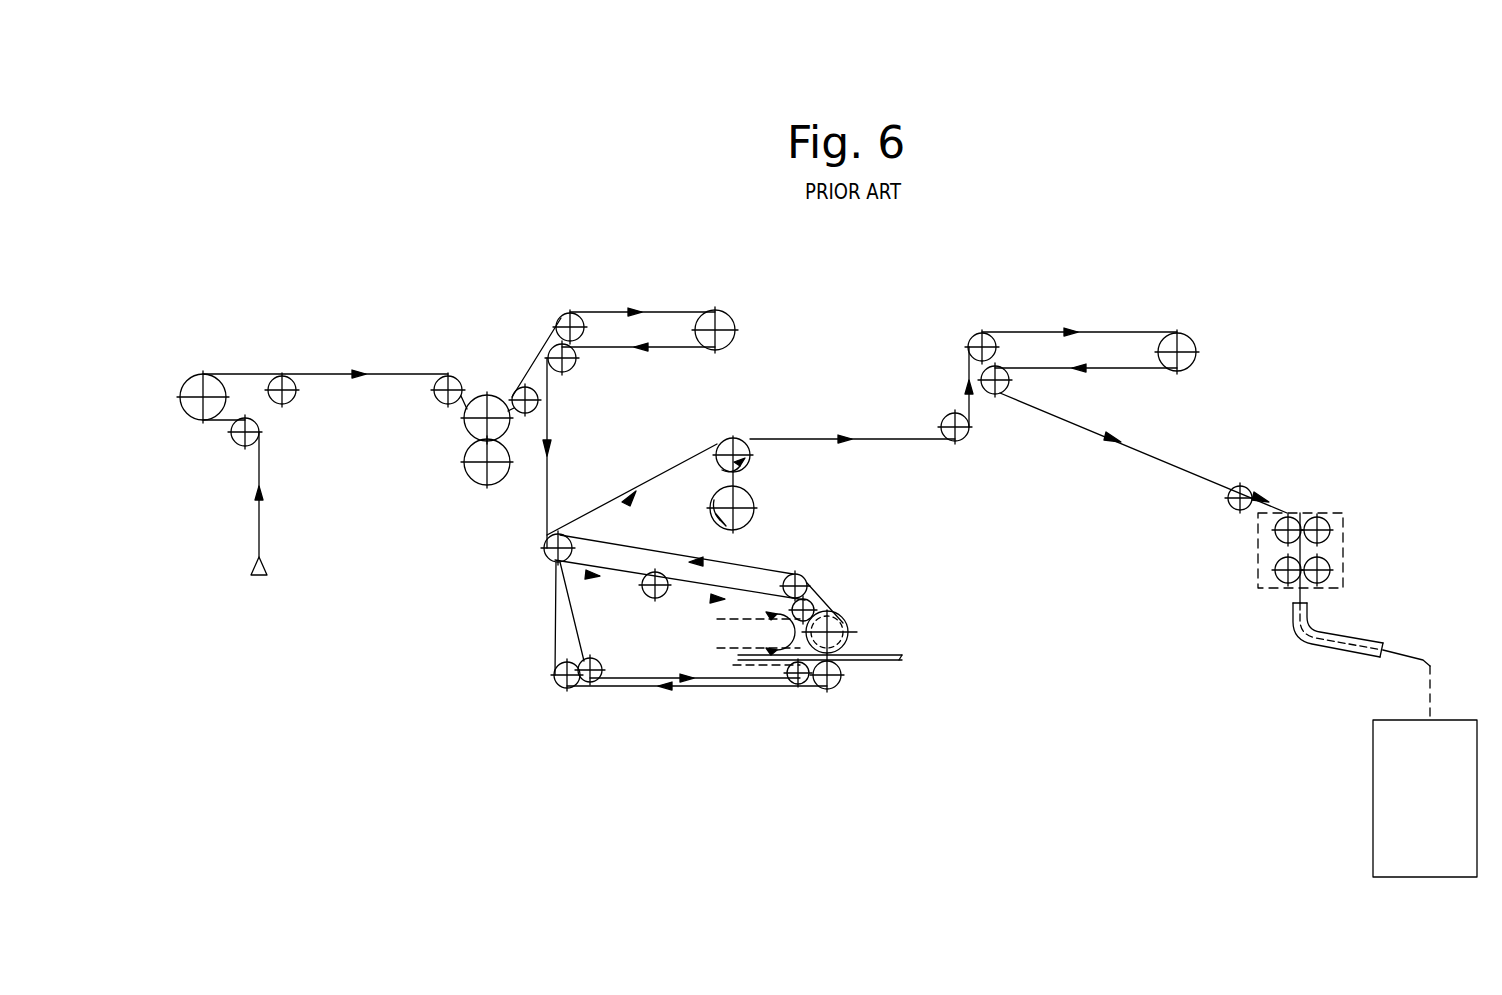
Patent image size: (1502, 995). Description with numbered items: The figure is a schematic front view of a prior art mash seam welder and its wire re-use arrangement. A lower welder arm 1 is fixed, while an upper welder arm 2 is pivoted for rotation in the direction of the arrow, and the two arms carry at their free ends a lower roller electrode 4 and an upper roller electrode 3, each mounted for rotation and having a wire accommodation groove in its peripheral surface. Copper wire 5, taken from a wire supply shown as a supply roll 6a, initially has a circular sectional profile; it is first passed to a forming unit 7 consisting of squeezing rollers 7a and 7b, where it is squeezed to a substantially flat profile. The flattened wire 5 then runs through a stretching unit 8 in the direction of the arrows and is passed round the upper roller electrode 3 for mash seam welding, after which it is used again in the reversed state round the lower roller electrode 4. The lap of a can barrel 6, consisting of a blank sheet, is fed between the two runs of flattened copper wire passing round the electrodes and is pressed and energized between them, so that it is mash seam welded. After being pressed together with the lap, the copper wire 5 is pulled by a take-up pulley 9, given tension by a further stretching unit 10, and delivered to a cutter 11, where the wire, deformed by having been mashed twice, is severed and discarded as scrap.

The lower welder arm 1 is at (771, 671).
The upper welder arm 2 is at (750, 630).
The upper roller electrode 3 is at (849, 621).
The lower roller electrode 4 is at (832, 688).
The copper wire 5 is at (259, 525).
The can barrel 6 is at (870, 656).
The supply roll 6a is at (192, 388).
The forming unit 7 is at (462, 413).
The squeezing roller 7a is at (472, 424).
The squeezing roller 7b is at (472, 471).
The stretching unit 8 is at (678, 312).
The take-up pulley 9 is at (737, 440).
The stretching unit 10 is at (1103, 332).
The cutter 11 is at (1347, 548).